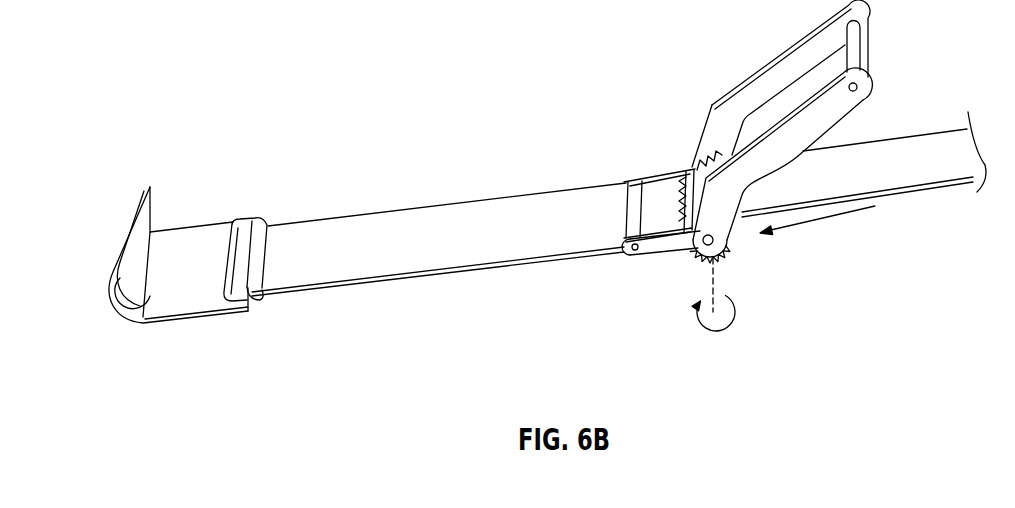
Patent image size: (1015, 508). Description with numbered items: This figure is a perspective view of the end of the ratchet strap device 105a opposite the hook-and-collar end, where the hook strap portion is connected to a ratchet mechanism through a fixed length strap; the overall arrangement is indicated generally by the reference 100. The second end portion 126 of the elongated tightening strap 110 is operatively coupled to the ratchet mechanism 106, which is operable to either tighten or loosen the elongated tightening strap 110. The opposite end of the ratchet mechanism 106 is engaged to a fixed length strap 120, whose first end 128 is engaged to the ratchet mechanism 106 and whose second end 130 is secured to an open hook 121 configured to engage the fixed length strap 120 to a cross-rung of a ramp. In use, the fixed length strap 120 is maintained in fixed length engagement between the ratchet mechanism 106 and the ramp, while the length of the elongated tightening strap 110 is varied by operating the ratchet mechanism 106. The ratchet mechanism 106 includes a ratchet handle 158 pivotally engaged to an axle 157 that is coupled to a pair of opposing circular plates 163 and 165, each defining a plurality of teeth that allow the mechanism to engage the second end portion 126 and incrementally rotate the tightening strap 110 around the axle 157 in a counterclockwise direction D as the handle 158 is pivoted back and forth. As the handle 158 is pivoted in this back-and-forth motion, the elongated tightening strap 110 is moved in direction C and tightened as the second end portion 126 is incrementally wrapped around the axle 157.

The tie-down strap assembly 100 is at (293, 107).
The ratchet strap device 105a is at (528, 120).
The ratchet mechanism 106 is at (743, 73).
The elongated tightening strap 110 is at (937, 170).
The fixed length strap 120 is at (404, 257).
The open hook 121 is at (175, 243).
The second end portion 126 is at (748, 224).
The first end 128 is at (601, 185).
The second end 130 is at (267, 232).
The axle 157 is at (696, 242).
The ratchet handle 158 is at (782, 143).
The circular plate 163 is at (717, 258).
The circular plate 165 is at (682, 183).
The direction C is at (813, 225).
The counterclockwise direction D is at (712, 332).